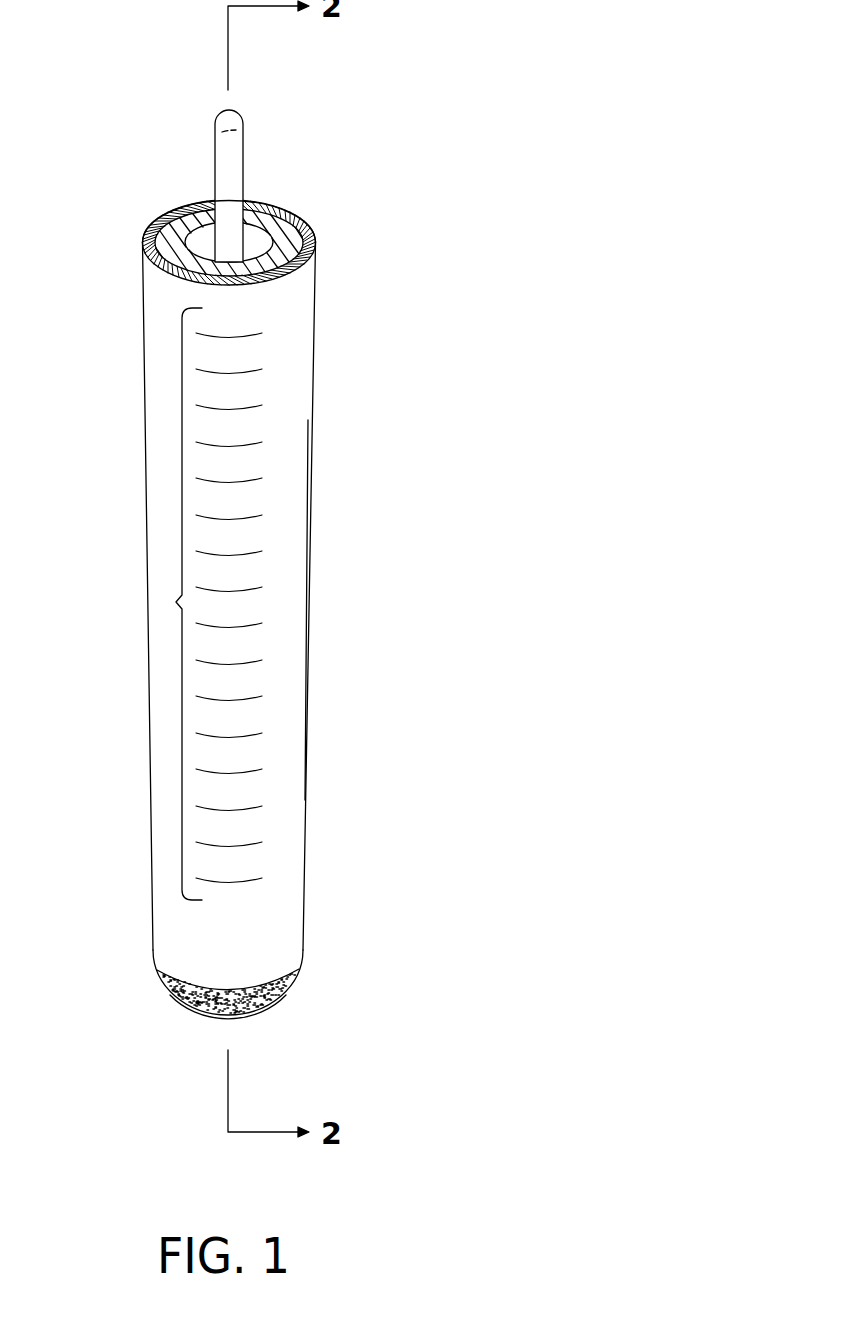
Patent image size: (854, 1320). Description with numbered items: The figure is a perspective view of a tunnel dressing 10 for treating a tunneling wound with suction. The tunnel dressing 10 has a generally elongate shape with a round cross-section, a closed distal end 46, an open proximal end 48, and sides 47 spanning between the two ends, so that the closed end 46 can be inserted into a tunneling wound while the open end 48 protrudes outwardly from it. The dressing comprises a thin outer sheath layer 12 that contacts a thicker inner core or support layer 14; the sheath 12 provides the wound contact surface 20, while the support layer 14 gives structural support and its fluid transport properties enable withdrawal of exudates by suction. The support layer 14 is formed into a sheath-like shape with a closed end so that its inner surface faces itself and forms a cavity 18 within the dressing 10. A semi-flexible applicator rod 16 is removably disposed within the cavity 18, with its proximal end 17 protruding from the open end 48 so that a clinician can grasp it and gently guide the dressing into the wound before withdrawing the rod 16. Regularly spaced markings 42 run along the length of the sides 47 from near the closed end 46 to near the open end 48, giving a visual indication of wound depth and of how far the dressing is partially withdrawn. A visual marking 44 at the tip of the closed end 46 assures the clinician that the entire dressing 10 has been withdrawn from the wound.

The tunnel dressing 10 is at (350, 400).
The outer sheath layer 12 is at (292, 212).
The inner core or support layer 14 is at (288, 240).
The applicator rod 16 is at (228, 160).
The proximal end 17 is at (232, 118).
The cavity 18 is at (254, 240).
The wound contact surface 20 is at (285, 607).
The markings 42 is at (176, 602).
The visual marking 44 is at (263, 1000).
The closed distal end 46 is at (199, 1009).
The sides 47 is at (309, 673).
The open proximal end 48 is at (158, 207).